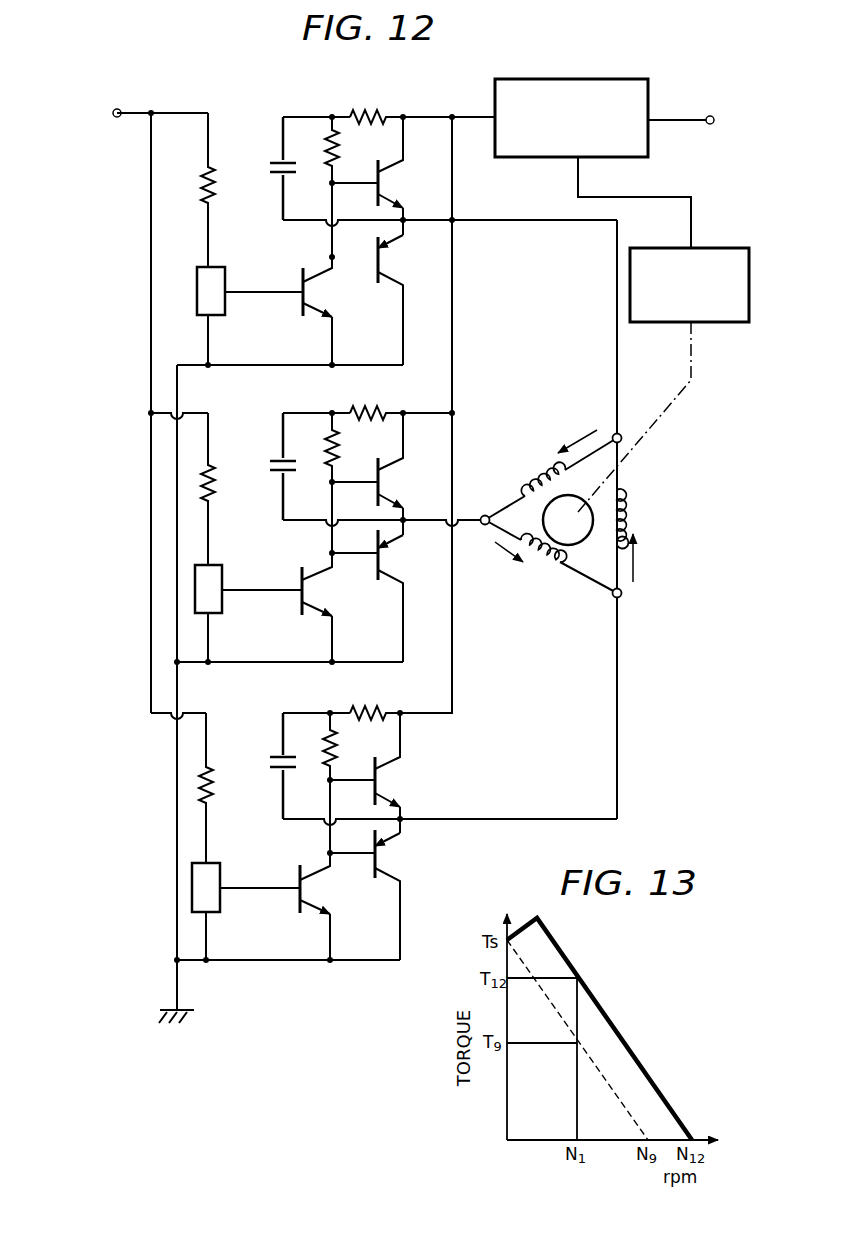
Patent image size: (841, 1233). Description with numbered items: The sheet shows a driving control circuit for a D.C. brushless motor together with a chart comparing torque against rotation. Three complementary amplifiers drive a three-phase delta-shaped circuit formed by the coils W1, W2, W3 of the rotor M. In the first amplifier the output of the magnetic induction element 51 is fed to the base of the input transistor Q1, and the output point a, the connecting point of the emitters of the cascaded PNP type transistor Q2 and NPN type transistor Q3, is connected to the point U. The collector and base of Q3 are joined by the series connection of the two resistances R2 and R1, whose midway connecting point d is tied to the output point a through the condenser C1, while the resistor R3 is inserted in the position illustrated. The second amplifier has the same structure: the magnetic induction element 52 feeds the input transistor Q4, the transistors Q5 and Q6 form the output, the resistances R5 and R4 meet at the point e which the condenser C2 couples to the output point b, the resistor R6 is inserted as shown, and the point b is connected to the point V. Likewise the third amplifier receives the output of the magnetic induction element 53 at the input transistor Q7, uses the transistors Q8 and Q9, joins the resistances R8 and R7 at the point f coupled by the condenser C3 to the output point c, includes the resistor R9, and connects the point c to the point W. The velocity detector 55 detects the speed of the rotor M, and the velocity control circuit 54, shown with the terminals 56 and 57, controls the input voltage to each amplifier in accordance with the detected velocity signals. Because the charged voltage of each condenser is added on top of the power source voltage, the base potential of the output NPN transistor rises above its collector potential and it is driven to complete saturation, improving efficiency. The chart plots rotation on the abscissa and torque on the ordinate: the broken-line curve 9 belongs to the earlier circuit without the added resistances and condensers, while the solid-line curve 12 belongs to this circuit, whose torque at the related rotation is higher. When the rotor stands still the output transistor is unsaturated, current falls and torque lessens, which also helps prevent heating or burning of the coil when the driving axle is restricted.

In FIG. 12, the magnetic induction element 51 is at (197, 294).
In FIG. 12, the magnetic induction element 52 is at (223, 570).
In FIG. 12, the magnetic induction element 53 is at (222, 868).
In FIG. 12, the velocity control circuit 54 is at (556, 79).
In FIG. 12, the velocity detector 55 is at (658, 248).
In FIG. 12, the output terminal 56 is at (695, 122).
In FIG. 12, the power supply terminal 57 is at (103, 115).
In FIG. 12, the resistance R1 is at (351, 187).
In FIG. 12, the resistance R2 is at (422, 108).
In FIG. 12, the resistor R3 is at (195, 190).
In FIG. 12, the resistance R4 is at (351, 483).
In FIG. 12, the resistance R5 is at (401, 405).
In FIG. 12, the resistor R6 is at (222, 489).
In FIG. 12, the resistance R7 is at (349, 783).
In FIG. 12, the resistance R8 is at (396, 705).
In FIG. 12, the resistor R9 is at (217, 788).
In FIG. 12, the condenser C1 is at (279, 168).
In FIG. 12, the condenser C2 is at (273, 466).
In FIG. 12, the condenser C3 is at (275, 766).
In FIG. 12, the input transistor Q1 is at (321, 311).
In FIG. 12, the PNP type transistor Q2 is at (394, 292).
In FIG. 12, the NPN type transistor Q3 is at (392, 168).
In FIG. 12, the input transistor Q4 is at (318, 607).
In FIG. 12, the transistor Q5 is at (392, 591).
In FIG. 12, the transistor Q6 is at (394, 466).
In FIG. 12, the input transistor Q7 is at (316, 906).
In FIG. 12, the transistor Q8 is at (391, 889).
In FIG. 12, the transistor Q9 is at (392, 766).
In FIG. 12, the motor winding W1 is at (531, 490).
In FIG. 12, the motor winding W2 is at (550, 576).
In FIG. 12, the motor winding W3 is at (629, 514).
In FIG. 12, the rotor M is at (568, 520).
In FIG. 12, the point U of the three-phase delta-shaped circuit U is at (613, 435).
In FIG. 12, the point V of the three-phase delta-shaped circuit V is at (484, 515).
In FIG. 12, the point W of the three-phase delta-shaped circuit W is at (626, 603).
In FIG. 12, the output point a is at (406, 218).
In FIG. 12, the output point b is at (406, 519).
In FIG. 12, the output point c is at (403, 818).
In FIG. 12, the midway connecting point d is at (332, 116).
In FIG. 12, the circuit node e is at (332, 412).
In FIG. 12, the circuit node f is at (330, 712).
In FIG. 13, the solid-line torque-rotation curve 12 is at (599, 1007).
In FIG. 13, the broken-line torque-rotation curve 9 is at (601, 1077).